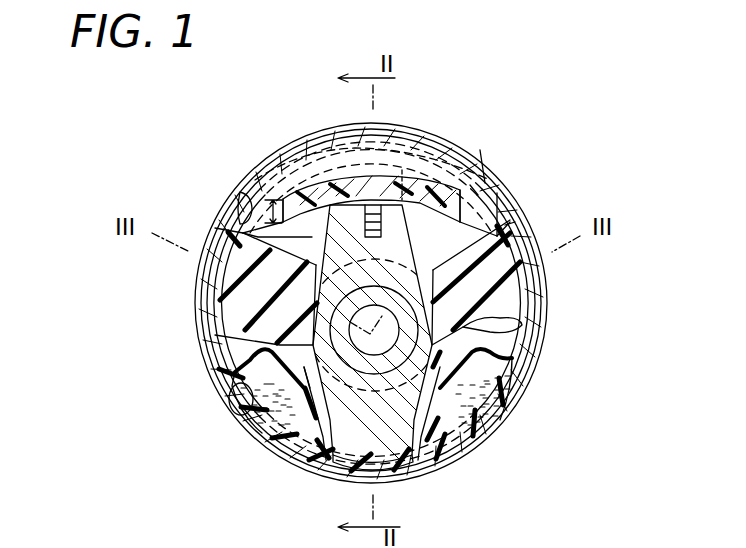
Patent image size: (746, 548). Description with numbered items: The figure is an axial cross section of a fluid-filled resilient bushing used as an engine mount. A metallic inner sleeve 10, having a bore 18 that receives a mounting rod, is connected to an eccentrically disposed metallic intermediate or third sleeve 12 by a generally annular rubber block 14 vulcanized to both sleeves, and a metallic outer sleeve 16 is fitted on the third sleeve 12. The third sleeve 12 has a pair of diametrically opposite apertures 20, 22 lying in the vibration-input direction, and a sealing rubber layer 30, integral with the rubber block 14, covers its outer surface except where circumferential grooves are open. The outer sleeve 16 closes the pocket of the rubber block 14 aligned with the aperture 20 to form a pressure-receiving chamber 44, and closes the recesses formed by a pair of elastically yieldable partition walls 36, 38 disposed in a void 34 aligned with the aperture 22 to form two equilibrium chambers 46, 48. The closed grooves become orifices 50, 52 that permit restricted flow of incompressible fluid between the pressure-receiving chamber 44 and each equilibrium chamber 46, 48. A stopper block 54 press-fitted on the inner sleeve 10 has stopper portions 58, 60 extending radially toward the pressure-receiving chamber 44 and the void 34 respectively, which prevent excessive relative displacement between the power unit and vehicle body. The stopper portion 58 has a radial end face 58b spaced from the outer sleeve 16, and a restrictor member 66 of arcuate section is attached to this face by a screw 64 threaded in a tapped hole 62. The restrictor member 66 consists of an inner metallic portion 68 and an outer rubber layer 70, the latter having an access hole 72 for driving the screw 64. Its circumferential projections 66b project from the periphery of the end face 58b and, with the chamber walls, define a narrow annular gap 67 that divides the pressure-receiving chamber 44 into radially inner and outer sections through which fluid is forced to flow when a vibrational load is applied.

The inner sleeve 10 is at (355, 337).
The intermediate or third sleeve 12 is at (238, 321).
The rubber block 14 is at (473, 232).
The outer sleeve 16 is at (536, 361).
The bore 18 is at (315, 390).
The aperture 20 is at (252, 205).
The aperture 22 is at (266, 385).
The sealing rubber layer 30 is at (520, 235).
The void 34 is at (522, 320).
The partition wall 36 is at (303, 440).
The partition wall 38 is at (450, 427).
The pressure-receiving chamber 44 is at (485, 212).
The equilibrium chamber 46 is at (278, 422).
The equilibrium chamber 48 is at (447, 403).
The orifice 50 is at (240, 237).
The orifice 52 is at (540, 290).
The stopper block 54 is at (310, 237).
The stopper portion 58 is at (473, 232).
The radial end face 58b is at (447, 190).
The stopper portion 60 is at (398, 422).
The tapped hole 62 is at (383, 202).
The screw 64 is at (365, 202).
The restrictor member 66 is at (396, 158).
The circumferential projection 66b is at (295, 182).
The annular gap 67 is at (478, 178).
The inner metallic portion 68 is at (337, 247).
The outer rubber layer 70 is at (403, 160).
The access hole 72 is at (358, 190).